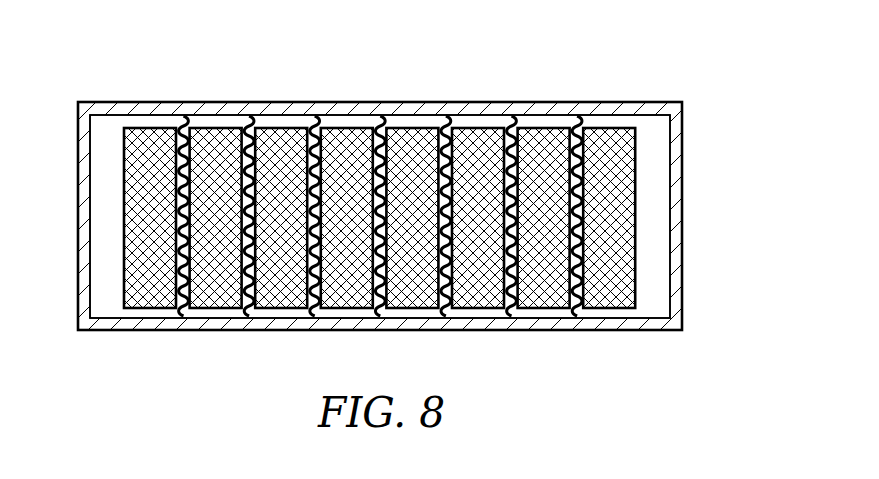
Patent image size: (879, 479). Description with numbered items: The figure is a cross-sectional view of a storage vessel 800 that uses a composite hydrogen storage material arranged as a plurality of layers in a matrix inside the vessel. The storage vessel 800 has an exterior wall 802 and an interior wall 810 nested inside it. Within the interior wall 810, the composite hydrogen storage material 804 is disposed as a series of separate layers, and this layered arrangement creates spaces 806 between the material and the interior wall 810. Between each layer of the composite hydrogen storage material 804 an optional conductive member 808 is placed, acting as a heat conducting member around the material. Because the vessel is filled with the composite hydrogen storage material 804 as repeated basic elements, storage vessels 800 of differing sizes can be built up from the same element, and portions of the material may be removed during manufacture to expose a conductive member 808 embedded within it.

The storage vessel 800 is at (656, 62).
The exterior wall 802 is at (682, 215).
The composite hydrogen storage material 804 is at (493, 140).
The spaces 806 is at (97, 217).
The conductive member 808 is at (183, 315).
The interior wall 810 is at (670, 260).